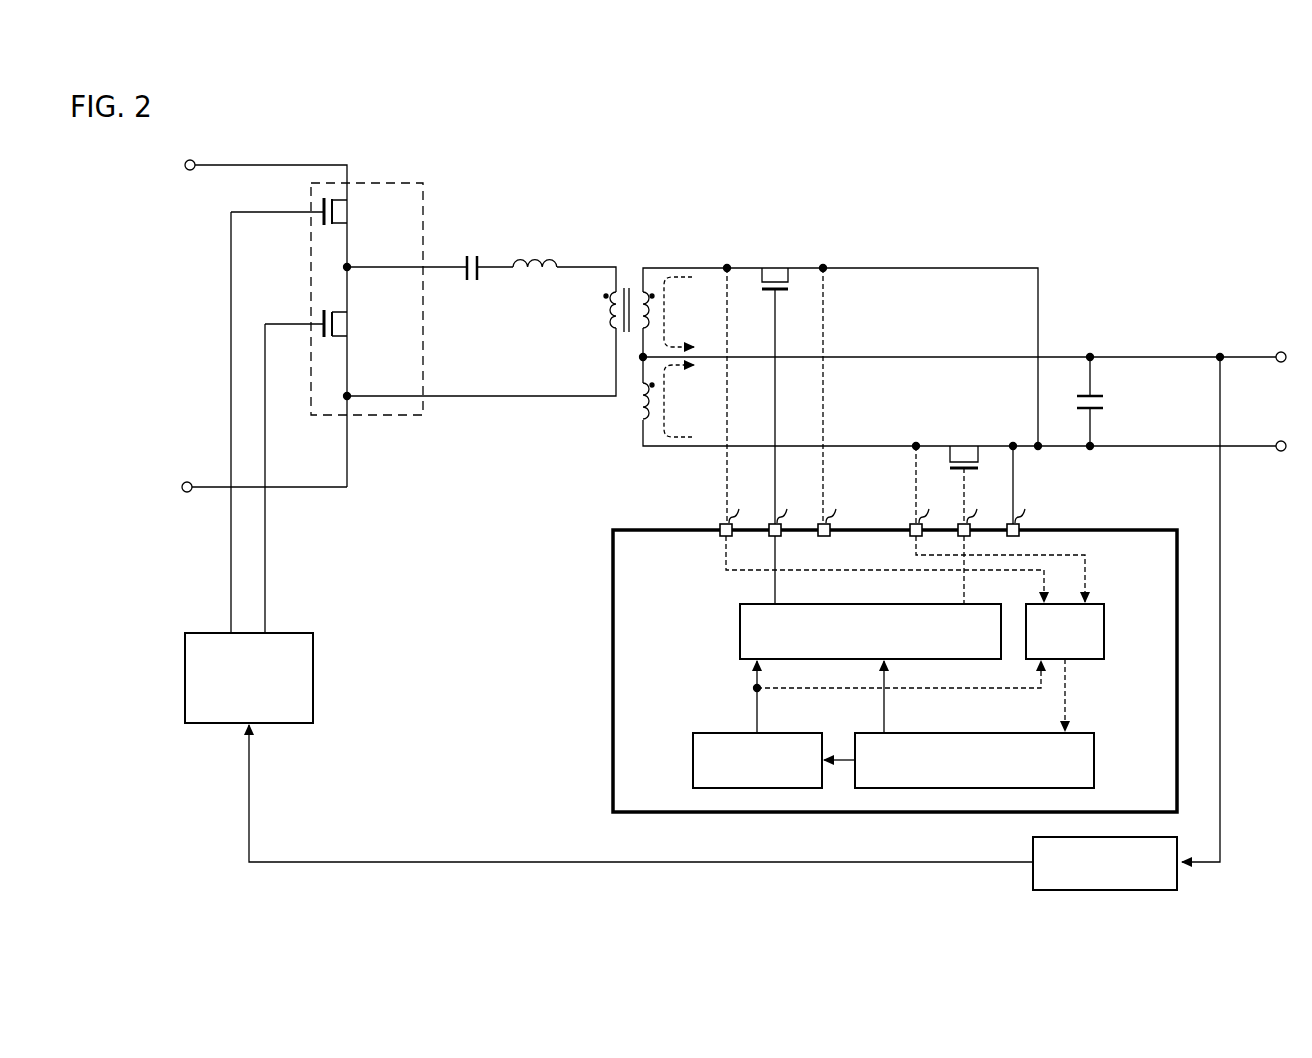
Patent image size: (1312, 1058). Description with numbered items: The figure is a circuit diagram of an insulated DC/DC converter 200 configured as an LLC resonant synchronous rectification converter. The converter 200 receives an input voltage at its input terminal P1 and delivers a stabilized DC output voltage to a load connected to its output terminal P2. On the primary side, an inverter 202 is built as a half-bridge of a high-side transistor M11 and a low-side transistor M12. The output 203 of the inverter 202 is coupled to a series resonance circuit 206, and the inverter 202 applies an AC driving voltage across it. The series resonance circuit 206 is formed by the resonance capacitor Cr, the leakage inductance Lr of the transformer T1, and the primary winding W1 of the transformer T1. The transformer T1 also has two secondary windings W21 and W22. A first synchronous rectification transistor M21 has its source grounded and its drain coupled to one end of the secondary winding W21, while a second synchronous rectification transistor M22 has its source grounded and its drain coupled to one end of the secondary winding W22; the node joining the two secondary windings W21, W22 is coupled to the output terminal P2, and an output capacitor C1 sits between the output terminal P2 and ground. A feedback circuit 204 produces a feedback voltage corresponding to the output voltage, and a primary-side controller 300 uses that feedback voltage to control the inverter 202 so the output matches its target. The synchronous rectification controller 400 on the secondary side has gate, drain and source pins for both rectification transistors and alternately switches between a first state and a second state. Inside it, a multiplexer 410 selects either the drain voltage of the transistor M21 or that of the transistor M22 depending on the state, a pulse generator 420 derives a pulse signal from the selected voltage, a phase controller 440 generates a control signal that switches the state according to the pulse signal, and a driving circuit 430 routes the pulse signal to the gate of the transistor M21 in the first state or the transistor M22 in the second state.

The DC/DC converter 200 is at (1130, 162).
The inverter 202 is at (395, 183).
The output of the inverter 203 is at (434, 275).
The feedback circuit 204 is at (1177, 878).
The series resonance circuit 206 is at (615, 410).
The primary-side controller 300 is at (185, 677).
The synchronous rectification controller 400 is at (1105, 529).
The multiplexer 410 is at (1104, 633).
The pulse generator 420 is at (1094, 762).
The driving circuit 430 is at (740, 629).
The phase controller 440 is at (693, 759).
The input terminal P1 is at (189, 158).
The output terminal P2 is at (1280, 351).
The high-side transistor M11 is at (354, 212).
The low-side transistor M12 is at (354, 324).
The first synchronous rectification transistor M21 is at (775, 262).
The second synchronous rectification transistor M22 is at (963, 440).
The resonance capacitor Cr is at (473, 253).
The leakage inductance Lr is at (537, 256).
The transformer T1 is at (626, 259).
The primary winding W1 is at (605, 312).
The secondary winding W21 is at (647, 286).
The secondary winding W22 is at (636, 432).
The output capacitor C1 is at (1112, 403).